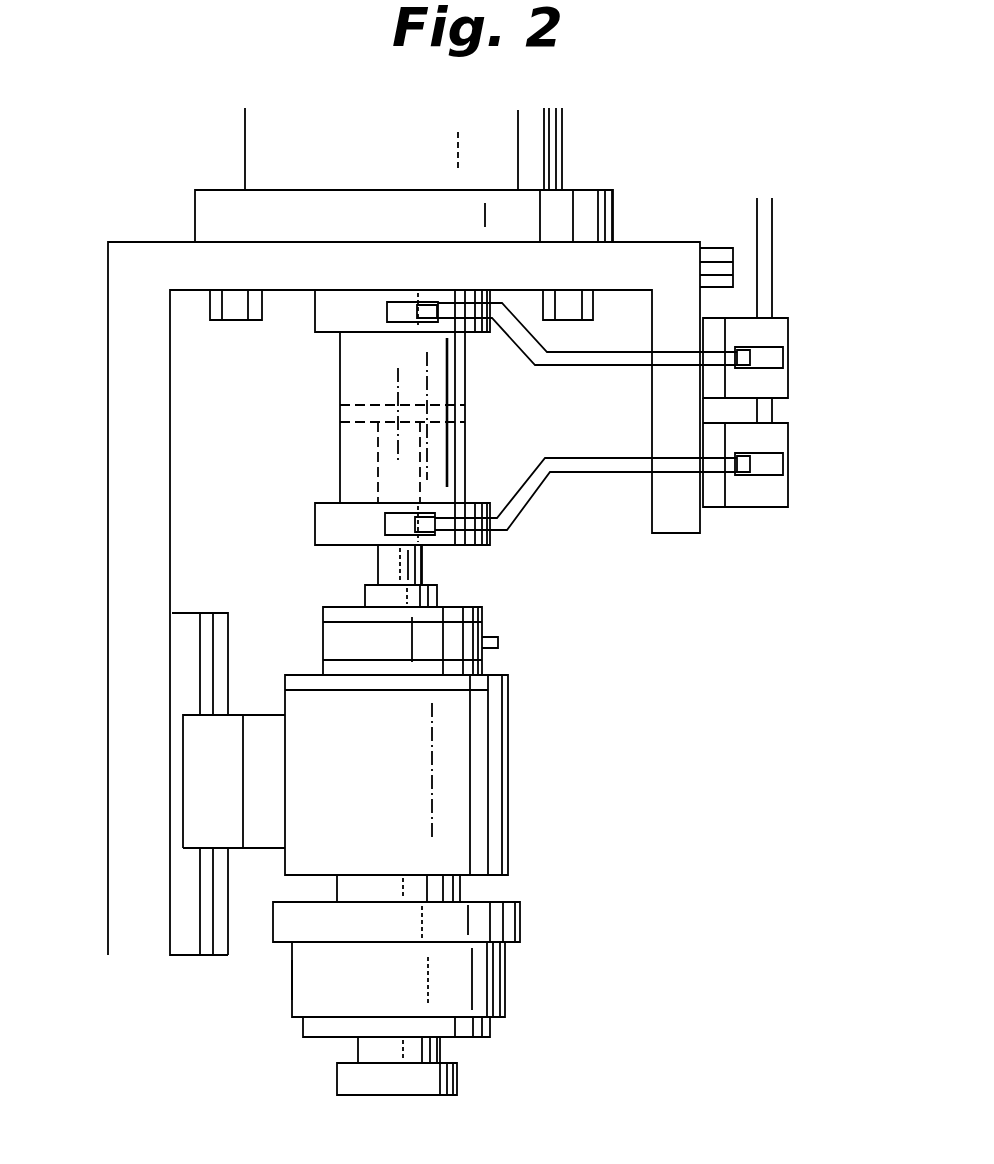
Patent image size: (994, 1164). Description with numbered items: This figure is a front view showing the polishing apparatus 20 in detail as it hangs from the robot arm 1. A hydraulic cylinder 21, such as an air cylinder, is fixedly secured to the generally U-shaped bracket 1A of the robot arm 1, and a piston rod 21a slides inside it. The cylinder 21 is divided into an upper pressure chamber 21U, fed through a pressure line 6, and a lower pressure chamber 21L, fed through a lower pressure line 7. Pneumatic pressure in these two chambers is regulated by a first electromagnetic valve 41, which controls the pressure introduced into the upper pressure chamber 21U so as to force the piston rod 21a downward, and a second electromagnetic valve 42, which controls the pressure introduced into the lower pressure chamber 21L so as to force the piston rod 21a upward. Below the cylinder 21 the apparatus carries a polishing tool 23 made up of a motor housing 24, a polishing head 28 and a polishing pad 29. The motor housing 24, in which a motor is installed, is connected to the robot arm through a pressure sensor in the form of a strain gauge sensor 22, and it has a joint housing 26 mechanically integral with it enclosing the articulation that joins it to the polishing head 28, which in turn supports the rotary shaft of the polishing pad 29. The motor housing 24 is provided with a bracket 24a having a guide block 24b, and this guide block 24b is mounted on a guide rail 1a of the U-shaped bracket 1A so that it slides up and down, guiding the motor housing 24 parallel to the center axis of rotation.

The robot arm 1 is at (570, 133).
The U-shaped bracket 1A is at (636, 236).
The guide rail 1a is at (198, 606).
The pressure line 6 is at (597, 362).
The lower pressure line 7 is at (598, 465).
The polishing apparatus 20 is at (536, 667).
The hydraulic cylinder 21 is at (478, 443).
The upper pressure chamber 21U is at (345, 388).
The lower pressure chamber 21L is at (345, 475).
The piston rod 21a is at (422, 562).
The strain gauge sensor 22 is at (495, 619).
The polishing tool 23 is at (526, 982).
The motor housing 24 is at (521, 771).
The bracket 24a is at (253, 827).
The guide block 24b is at (198, 779).
The joint housing 26 is at (508, 917).
The polishing head 28 is at (295, 1000).
The polishing pad 29 is at (457, 1073).
The first electromagnetic valve 41 is at (803, 358).
The second electromagnetic valve 42 is at (803, 468).